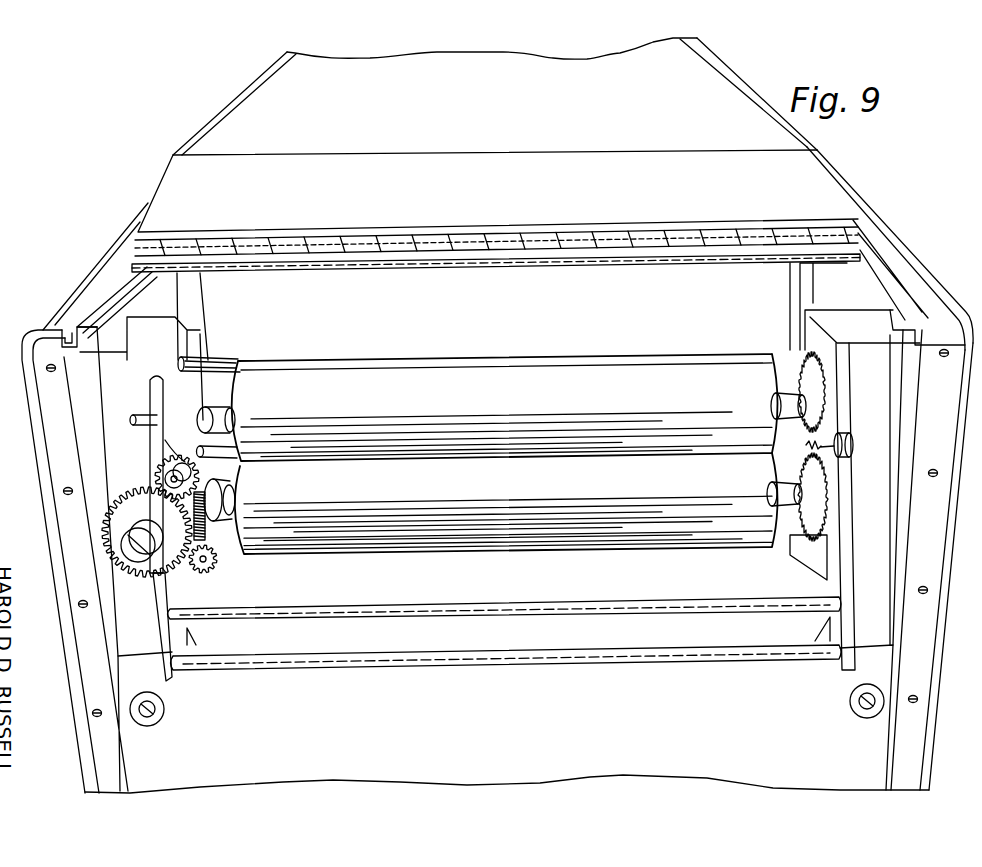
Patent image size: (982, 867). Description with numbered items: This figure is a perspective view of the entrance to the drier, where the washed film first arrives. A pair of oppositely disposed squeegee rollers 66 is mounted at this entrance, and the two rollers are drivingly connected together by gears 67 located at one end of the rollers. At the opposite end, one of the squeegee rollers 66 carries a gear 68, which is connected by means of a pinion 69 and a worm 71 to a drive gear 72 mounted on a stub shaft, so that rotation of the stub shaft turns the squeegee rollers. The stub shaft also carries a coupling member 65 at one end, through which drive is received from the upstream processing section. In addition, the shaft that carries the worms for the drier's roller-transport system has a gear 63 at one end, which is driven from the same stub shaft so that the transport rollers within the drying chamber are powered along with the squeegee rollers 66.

The gear 63 is at (158, 470).
The coupling member 65 is at (104, 533).
The squeegee rollers 66 is at (481, 398).
The gears 67 is at (803, 452).
The gear 68 is at (212, 536).
The pinion 69 is at (210, 566).
The worm 71 is at (226, 545).
The drive gear 72 is at (172, 567).